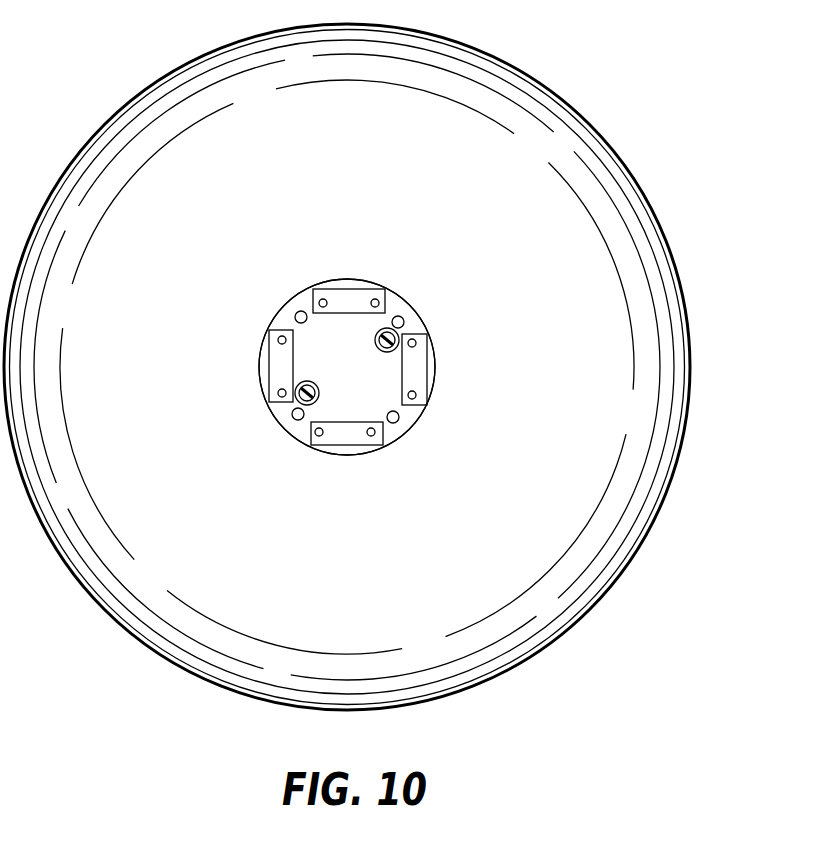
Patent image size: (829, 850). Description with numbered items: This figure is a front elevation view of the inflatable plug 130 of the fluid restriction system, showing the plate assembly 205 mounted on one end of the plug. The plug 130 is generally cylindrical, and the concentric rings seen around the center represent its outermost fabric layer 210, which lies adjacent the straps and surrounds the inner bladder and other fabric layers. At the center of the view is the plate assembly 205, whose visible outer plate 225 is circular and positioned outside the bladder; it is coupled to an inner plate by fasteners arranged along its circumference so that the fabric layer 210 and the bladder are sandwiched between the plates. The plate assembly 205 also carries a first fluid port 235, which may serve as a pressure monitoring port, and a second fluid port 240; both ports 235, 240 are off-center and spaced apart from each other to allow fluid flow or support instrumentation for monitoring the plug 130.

The inflatable plug 130 is at (600, 84).
The outermost fabric layer 210 is at (627, 253).
The plate assembly 205 is at (264, 413).
The outer plate 225 is at (285, 318).
The first fluid port 235 is at (392, 329).
The second fluid port 240 is at (302, 404).